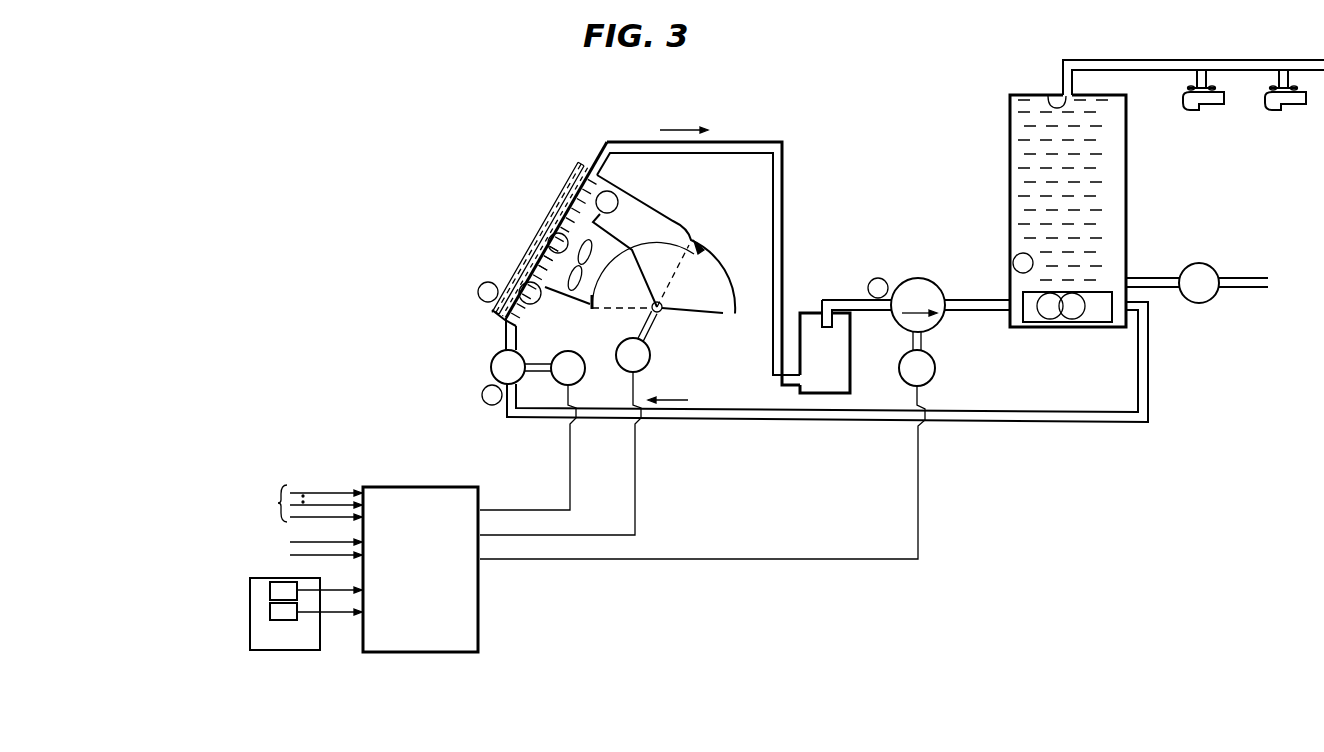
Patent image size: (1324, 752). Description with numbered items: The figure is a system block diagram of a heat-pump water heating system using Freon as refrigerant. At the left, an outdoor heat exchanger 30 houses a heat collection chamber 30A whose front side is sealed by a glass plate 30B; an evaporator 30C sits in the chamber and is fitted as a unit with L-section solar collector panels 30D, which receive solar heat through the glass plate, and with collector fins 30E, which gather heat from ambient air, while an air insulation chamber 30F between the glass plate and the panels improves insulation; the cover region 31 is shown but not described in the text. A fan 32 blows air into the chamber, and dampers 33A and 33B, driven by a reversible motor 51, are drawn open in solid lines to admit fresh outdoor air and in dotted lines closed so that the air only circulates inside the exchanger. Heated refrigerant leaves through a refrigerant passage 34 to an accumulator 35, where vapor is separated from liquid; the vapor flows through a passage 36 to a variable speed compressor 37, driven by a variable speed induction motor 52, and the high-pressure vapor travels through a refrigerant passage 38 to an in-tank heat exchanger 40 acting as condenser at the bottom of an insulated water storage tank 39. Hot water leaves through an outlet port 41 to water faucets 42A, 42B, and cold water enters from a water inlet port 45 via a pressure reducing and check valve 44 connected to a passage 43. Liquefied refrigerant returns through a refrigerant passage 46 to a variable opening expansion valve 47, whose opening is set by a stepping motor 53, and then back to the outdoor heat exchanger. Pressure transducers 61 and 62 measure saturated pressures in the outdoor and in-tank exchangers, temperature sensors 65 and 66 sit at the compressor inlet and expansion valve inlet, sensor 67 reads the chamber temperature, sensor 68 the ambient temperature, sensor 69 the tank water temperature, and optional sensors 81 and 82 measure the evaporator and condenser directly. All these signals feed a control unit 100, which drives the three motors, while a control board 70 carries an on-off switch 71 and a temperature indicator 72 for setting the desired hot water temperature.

The outdoor heat exchanger 30 is at (586, 157).
The heat collection chamber 30A is at (597, 313).
The glass plate 30B is at (537, 281).
The evaporator 30C is at (527, 262).
The solar collector panels 30D is at (503, 322).
The collector fins 30E is at (503, 347).
The air insulation chamber 30F is at (491, 310).
The transparent cover 31 is at (566, 185).
The fan 32 is at (614, 252).
The damper 33A is at (697, 315).
The damper 33B is at (688, 243).
The refrigerant passage 34 is at (735, 126).
The accumulator 35 is at (808, 312).
The passage 36 is at (835, 298).
The variable speed compressor 37 is at (918, 278).
The refrigerant passage 38 is at (966, 311).
The water storage tank 39 is at (1126, 203).
The in-tank heat exchanger 40 is at (1100, 322).
The outlet port 41 is at (1060, 95).
The water faucet 42A is at (1183, 112).
The water faucet 42B is at (1265, 112).
The refrigerant passage 43 is at (1250, 292).
The pressure reducing and check valve 44 is at (1203, 265).
The water inlet port 45 is at (1127, 280).
The refrigerant passage 46 is at (1150, 390).
The variable opening expansion valve 47 is at (492, 372).
The reversible motor 51 is at (650, 357).
The variable speed induction motor 52 is at (935, 372).
The stepping motor 53 is at (584, 375).
The pressure transducer 61 is at (518, 286).
The pressure transducer 62 is at (1036, 322).
The temperature sensor 65 is at (874, 279).
The temperature sensor 66 is at (487, 403).
The temperature sensor 67 is at (618, 196).
The temperature sensor 68 is at (477, 290).
The temperature sensor 69 is at (1013, 258).
The control board 70 is at (250, 640).
The on-off switch 71 is at (270, 590).
The temperature indicator 72 is at (270, 611).
The temperature sensor 81 is at (548, 238).
The temperature sensor 82 is at (1072, 322).
The control unit 100 is at (413, 487).